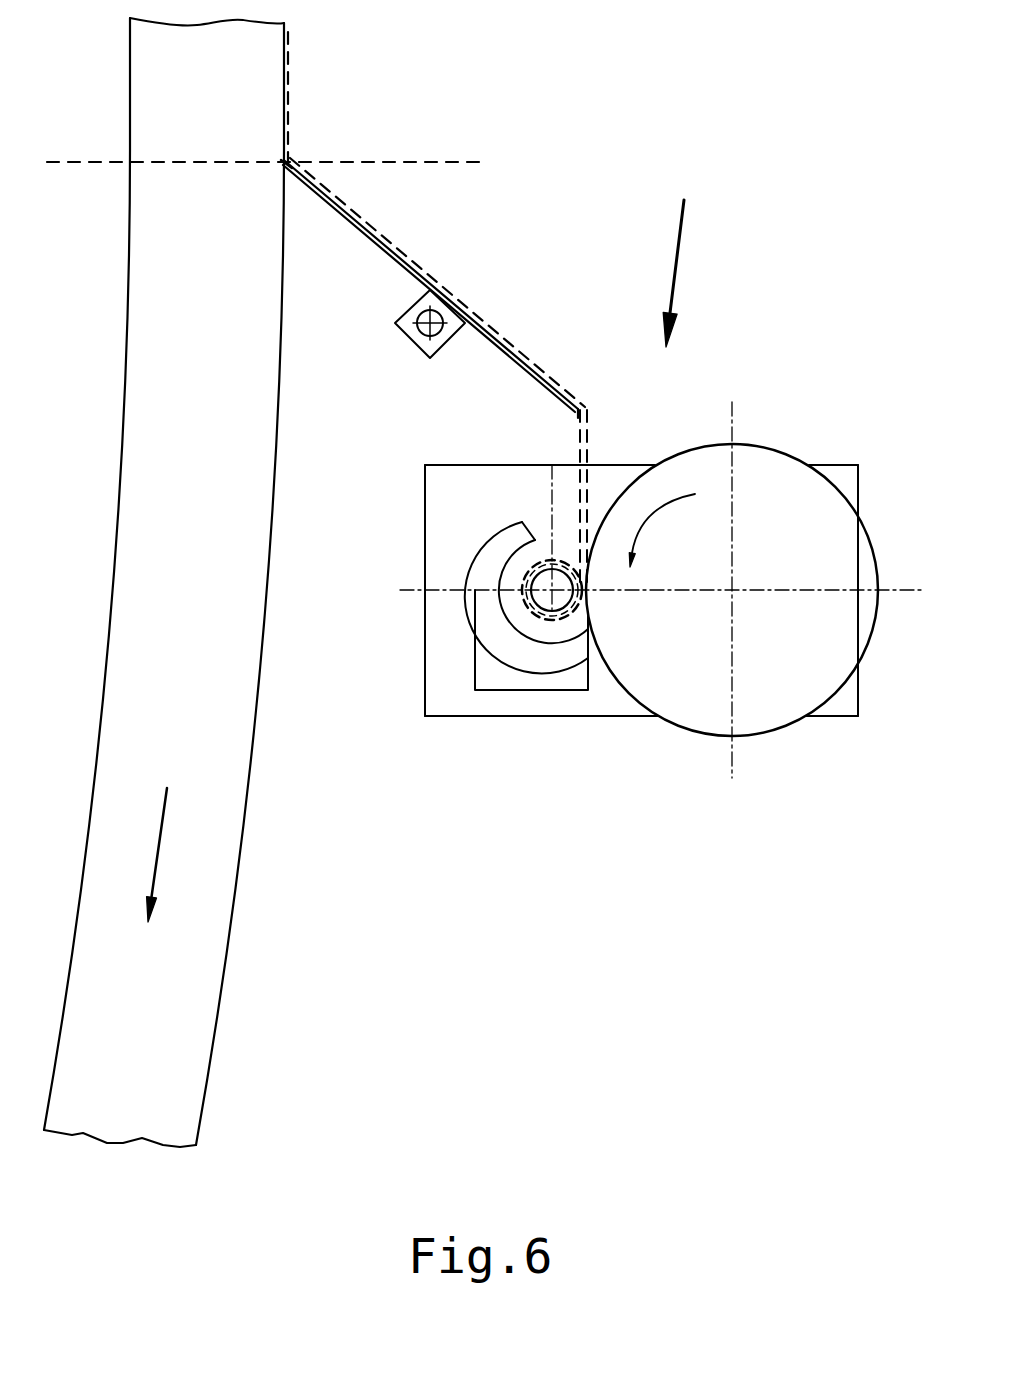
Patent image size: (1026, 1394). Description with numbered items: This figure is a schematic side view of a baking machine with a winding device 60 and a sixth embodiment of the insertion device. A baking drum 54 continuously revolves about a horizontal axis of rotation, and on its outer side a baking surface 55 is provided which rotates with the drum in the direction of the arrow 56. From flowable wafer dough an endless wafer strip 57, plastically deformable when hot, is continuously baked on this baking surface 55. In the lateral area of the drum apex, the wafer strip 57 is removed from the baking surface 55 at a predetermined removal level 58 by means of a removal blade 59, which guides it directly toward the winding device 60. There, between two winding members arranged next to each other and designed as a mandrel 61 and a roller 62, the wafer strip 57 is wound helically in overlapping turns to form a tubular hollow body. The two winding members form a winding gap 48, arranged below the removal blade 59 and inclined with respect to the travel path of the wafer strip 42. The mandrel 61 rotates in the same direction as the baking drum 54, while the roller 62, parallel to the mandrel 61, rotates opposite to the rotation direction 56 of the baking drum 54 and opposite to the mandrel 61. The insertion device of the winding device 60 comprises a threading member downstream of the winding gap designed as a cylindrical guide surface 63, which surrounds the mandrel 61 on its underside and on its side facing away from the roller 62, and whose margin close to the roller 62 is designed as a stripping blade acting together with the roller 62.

The travel path of the wafer strip 42 is at (352, 212).
The winding gap 48 is at (560, 528).
The baking drum 54 is at (147, 71).
The baking surface 55 is at (230, 962).
The rotation direction of the baking drum 56 is at (157, 855).
The wafer strip 57 is at (287, 80).
The removal level 58 is at (288, 160).
The removal blade 59 is at (388, 256).
The winding device 60 is at (682, 250).
The mandrel 61 is at (540, 597).
The roller 62 is at (780, 465).
The cylindrical guide surface 63 is at (518, 565).